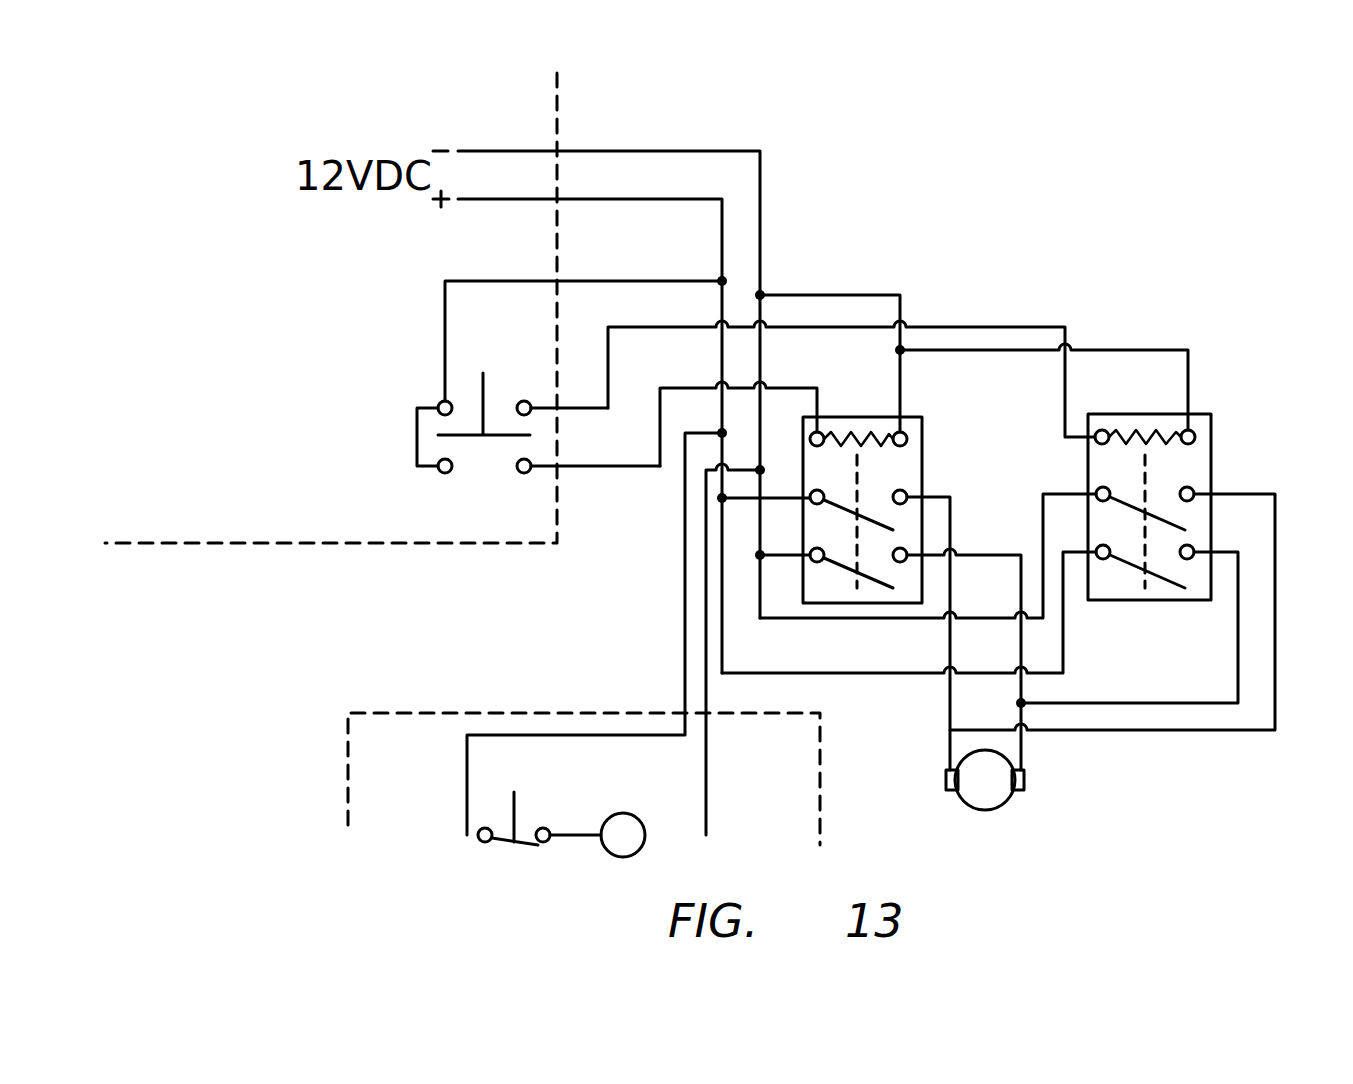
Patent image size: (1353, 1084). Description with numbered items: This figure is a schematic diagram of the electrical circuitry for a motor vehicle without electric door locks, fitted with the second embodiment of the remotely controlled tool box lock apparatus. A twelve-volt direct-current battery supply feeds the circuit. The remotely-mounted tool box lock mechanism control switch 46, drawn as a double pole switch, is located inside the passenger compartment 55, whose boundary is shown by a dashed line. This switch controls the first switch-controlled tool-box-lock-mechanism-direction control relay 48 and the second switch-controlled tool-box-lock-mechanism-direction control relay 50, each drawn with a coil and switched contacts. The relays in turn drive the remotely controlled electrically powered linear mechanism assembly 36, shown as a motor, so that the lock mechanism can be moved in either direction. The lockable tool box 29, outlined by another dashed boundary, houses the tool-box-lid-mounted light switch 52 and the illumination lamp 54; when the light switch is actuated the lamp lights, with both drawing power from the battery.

The lockable tool box 29 is at (348, 768).
The remotely controlled electrically powered linear mechanism assembly 36 is at (997, 810).
The remotely-mounted tool box lock mechanism control switch 46 is at (493, 478).
The first switch-controlled tool-box-lock-mechanism-direction control relay 48 is at (862, 628).
The second switch-controlled tool-box-lock-mechanism-direction control relay 50 is at (1220, 438).
The tool-box-lid-mounted light switch 52 is at (508, 852).
The illumination lamp 54 is at (627, 858).
The passenger compartment 55 is at (557, 133).